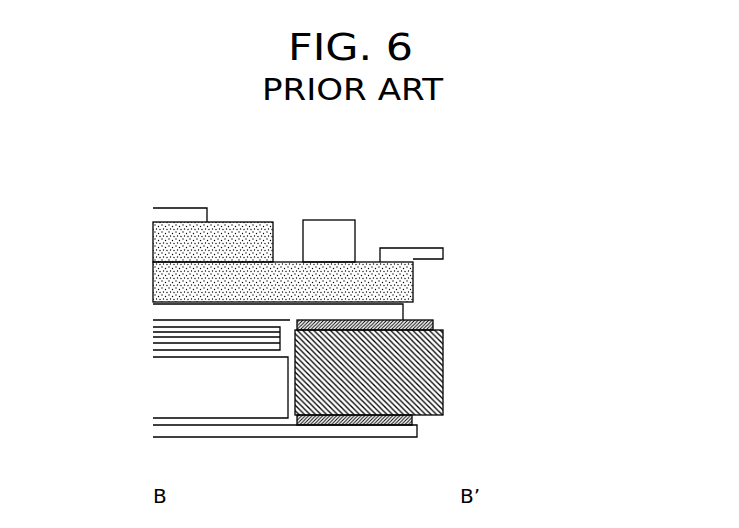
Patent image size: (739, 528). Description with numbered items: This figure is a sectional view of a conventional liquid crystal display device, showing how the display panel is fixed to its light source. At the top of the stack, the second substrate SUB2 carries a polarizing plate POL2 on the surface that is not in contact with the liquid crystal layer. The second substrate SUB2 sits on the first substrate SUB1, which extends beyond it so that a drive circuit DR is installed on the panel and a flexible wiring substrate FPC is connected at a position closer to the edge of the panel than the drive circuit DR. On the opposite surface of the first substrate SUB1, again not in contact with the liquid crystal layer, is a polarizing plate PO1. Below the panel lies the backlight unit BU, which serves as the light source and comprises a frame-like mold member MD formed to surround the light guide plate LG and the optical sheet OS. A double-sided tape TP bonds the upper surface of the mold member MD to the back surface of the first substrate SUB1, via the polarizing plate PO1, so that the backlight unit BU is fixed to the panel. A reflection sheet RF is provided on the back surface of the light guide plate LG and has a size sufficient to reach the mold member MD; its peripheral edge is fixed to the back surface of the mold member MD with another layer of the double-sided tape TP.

The polarizing plate POL2 is at (178, 213).
The second substrate SUB2 is at (250, 232).
The drive circuit DR is at (333, 230).
The flexible wiring substrate FPC is at (413, 250).
The first substrate SUB1 is at (403, 278).
The polarizing plate PO1 is at (392, 313).
The optical sheet OS is at (148, 323).
The light guide plate LG is at (177, 390).
The double-sided tape TP is at (433, 323).
The mold member MD is at (437, 375).
The backlight unit BU is at (532, 317).
The reflection sheet RF is at (275, 428).